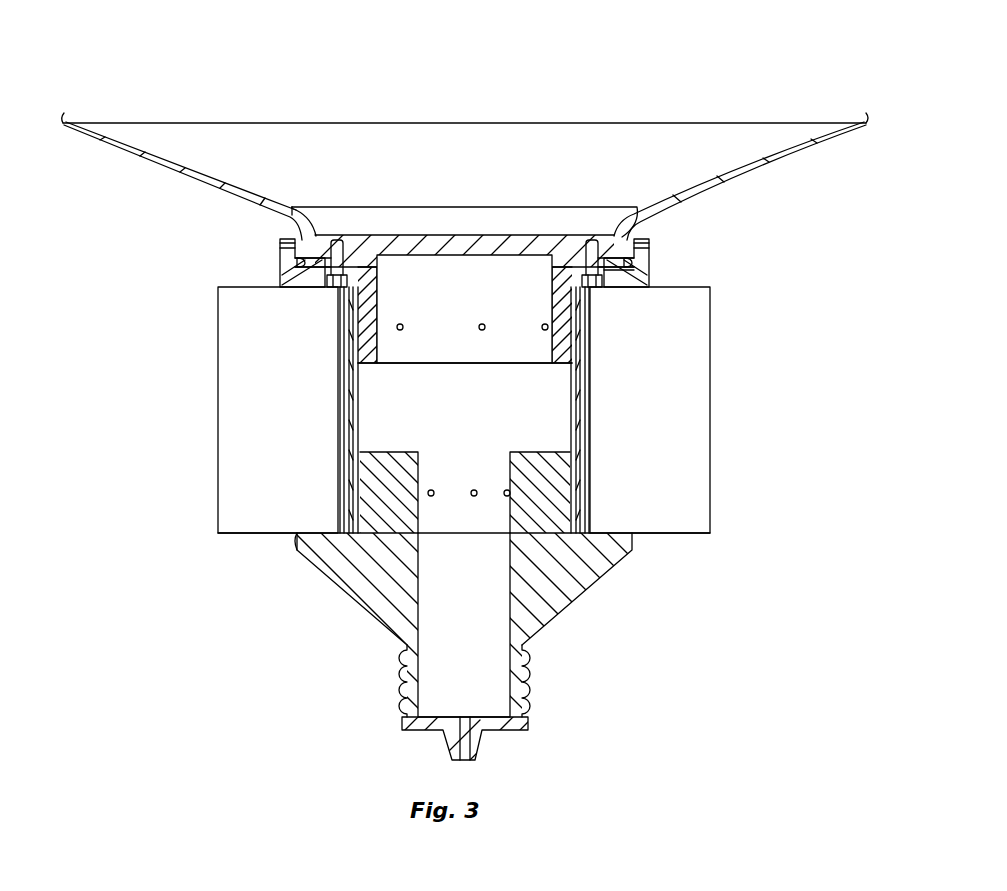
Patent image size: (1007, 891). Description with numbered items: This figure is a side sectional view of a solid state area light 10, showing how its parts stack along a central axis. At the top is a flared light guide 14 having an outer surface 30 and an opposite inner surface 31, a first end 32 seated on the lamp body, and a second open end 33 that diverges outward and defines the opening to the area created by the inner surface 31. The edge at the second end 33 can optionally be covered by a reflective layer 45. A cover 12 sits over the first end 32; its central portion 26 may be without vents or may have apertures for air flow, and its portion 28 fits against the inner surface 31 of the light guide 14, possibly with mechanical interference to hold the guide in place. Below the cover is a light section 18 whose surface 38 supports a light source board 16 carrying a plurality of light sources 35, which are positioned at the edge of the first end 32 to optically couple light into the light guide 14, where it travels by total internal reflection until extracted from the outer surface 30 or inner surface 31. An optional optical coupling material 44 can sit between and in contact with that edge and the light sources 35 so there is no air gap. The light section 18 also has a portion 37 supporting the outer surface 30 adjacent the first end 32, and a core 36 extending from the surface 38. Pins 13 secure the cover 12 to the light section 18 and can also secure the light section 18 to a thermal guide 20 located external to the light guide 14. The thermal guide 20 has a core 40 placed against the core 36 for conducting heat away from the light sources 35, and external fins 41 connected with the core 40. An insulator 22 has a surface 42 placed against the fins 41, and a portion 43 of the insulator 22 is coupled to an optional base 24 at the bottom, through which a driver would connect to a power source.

The solid state area light 10 is at (744, 37).
The cover 12 is at (560, 207).
The pins 13 is at (588, 240).
The light guide 14 is at (766, 177).
The light source board 16 is at (313, 270).
The light section 18 is at (650, 272).
The thermal guide 20 is at (704, 376).
The insulator 22 is at (580, 587).
The base 24 is at (523, 723).
The central portion 26 is at (424, 235).
The portion 28 is at (294, 226).
The outer surface 30 is at (712, 192).
The inner surface 31 is at (723, 178).
The first end 32 is at (628, 270).
The second open end 33 is at (866, 123).
The light sources 35 is at (648, 252).
The core 36 is at (360, 349).
The portion 37 is at (280, 281).
The surface 38 is at (357, 262).
The core 40 is at (380, 452).
The external fins 41 is at (226, 387).
The surface 42 is at (320, 533).
The portion 43 is at (520, 687).
The optical coupling material 44 is at (297, 262).
The reflective layer 45 is at (63, 123).